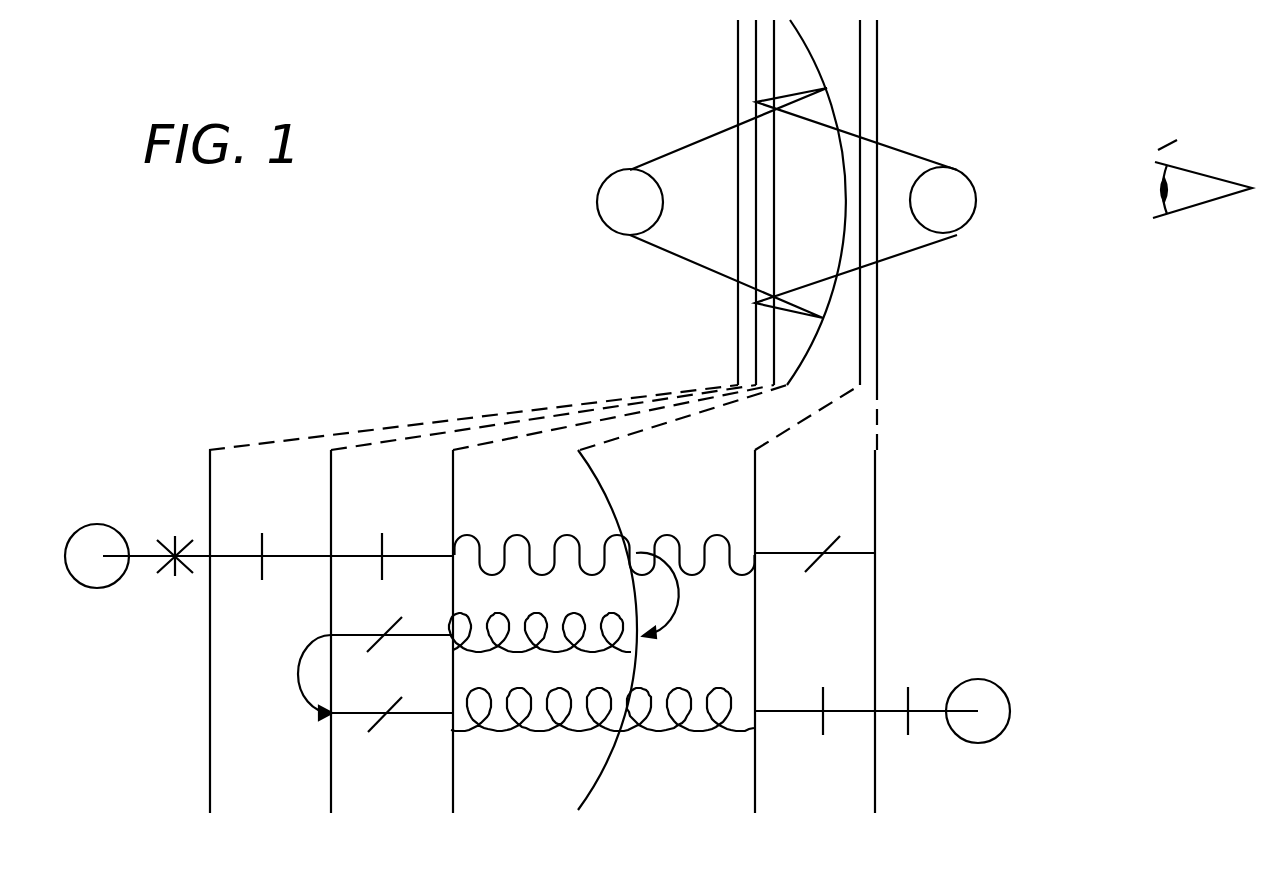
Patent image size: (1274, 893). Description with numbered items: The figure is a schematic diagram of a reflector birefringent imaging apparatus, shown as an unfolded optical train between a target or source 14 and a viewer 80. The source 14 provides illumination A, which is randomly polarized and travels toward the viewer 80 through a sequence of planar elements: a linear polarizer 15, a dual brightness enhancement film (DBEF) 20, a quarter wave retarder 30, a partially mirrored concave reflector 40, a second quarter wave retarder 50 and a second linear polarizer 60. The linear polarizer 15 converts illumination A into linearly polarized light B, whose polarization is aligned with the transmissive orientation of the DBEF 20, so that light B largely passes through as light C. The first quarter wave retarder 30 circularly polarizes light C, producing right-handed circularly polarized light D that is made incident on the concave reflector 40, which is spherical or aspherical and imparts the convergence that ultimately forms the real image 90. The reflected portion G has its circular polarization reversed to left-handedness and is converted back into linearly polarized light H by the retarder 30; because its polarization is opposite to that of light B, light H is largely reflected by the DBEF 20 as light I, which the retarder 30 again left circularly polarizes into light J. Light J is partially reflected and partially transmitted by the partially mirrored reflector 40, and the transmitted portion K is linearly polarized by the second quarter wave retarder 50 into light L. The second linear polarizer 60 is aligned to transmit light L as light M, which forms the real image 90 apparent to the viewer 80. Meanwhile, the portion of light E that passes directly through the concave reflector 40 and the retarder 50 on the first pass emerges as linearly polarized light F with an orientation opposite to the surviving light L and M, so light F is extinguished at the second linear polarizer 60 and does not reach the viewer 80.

The target or source 14 is at (625, 188).
The real image 90 is at (955, 190).
The viewer 80 is at (1202, 181).
The linear polarizer 15 is at (211, 654).
The dual brightness enhancement film (DBEF) 20 is at (332, 654).
The quarter wave retarder 30 is at (455, 654).
The partially mirrored concave reflector 40 is at (596, 654).
The second quarter wave retarder 50 is at (752, 654).
The second linear polarizer 60 is at (873, 654).
The illumination A is at (175, 578).
The linearly polarized light B is at (261, 577).
The light transmitted through DBEF C is at (382, 577).
The circularly polarized light D is at (543, 599).
The light passing through concave reflector E is at (693, 606).
The linearly polarized light F is at (821, 578).
The reflected portion of light G is at (543, 674).
The linearly polarized light H is at (384, 655).
The light reflected by DBEF I is at (385, 734).
The left circularly polarized light J is at (542, 754).
The transmitted portion K is at (692, 754).
The linearly polarized light L is at (817, 730).
The transmitted light M is at (907, 732).